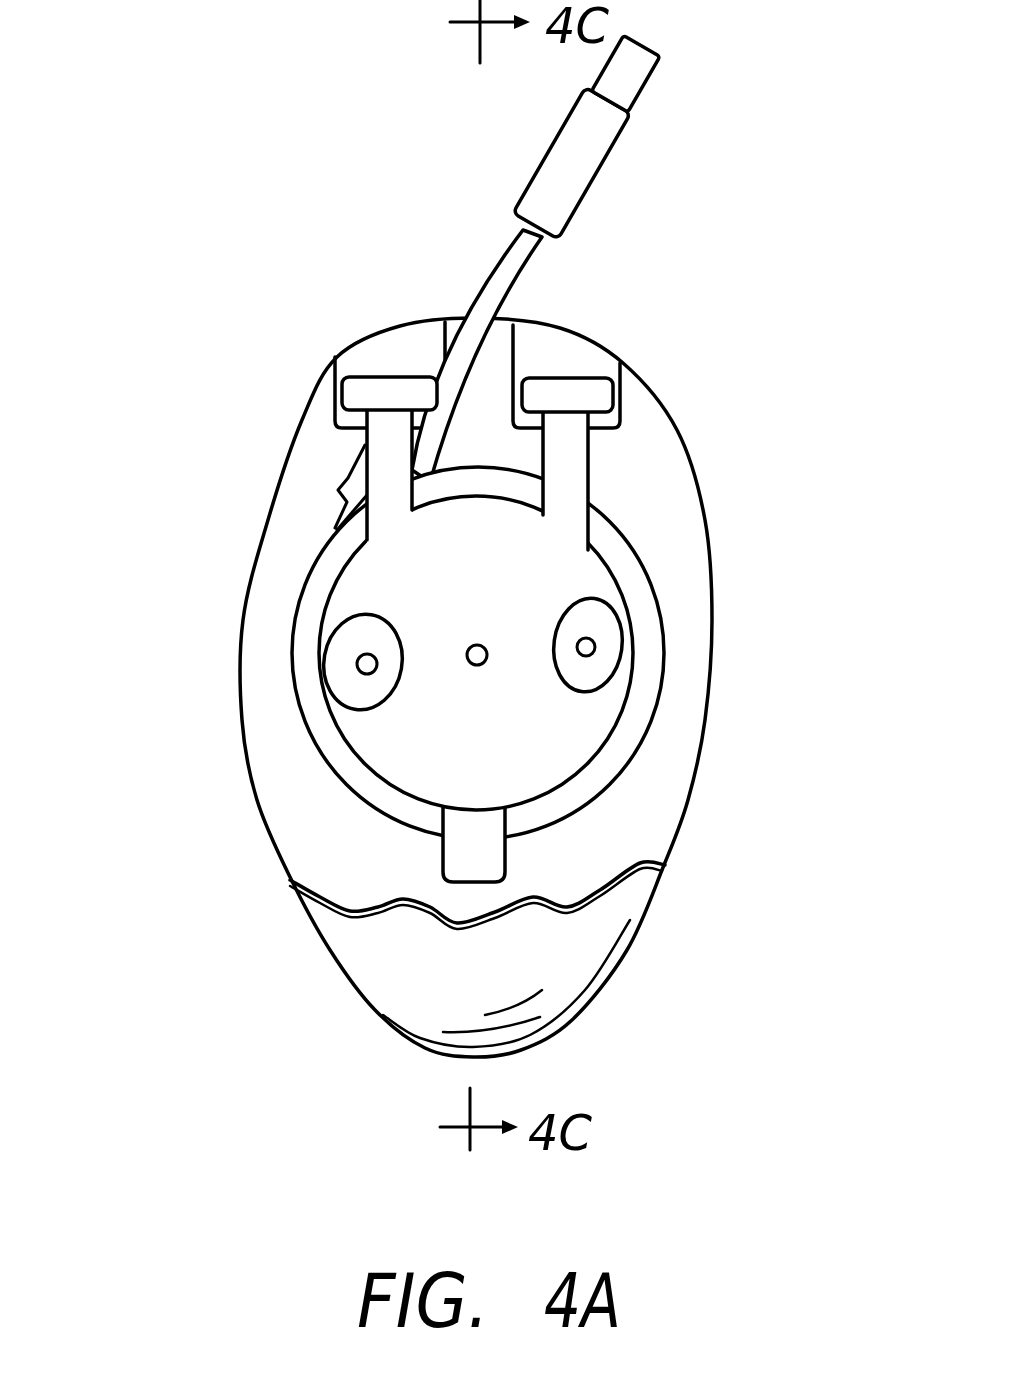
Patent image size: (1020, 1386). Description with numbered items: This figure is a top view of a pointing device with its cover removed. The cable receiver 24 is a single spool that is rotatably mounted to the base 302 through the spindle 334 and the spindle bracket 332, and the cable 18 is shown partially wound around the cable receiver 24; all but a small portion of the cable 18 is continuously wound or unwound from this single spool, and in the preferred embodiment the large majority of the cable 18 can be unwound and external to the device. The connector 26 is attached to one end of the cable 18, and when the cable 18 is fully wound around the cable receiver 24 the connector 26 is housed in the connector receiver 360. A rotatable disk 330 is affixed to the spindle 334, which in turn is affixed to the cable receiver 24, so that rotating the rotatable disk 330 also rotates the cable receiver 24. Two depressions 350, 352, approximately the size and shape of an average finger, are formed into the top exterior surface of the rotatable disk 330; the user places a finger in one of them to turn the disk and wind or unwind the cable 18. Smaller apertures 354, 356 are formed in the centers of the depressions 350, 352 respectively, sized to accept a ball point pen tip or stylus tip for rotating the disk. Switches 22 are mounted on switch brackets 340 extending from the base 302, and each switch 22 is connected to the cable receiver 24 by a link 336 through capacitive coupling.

The cable 18 is at (490, 277).
The switch 22 is at (340, 388).
The cable receiver 24 is at (606, 516).
The connector 26 is at (567, 125).
The base 302 is at (273, 830).
The rotatable disk 330 is at (373, 575).
The spindle bracket 332 is at (458, 863).
The spindle 334 is at (488, 662).
The link 336 is at (382, 472).
The switch bracket 340 is at (386, 355).
The depression 350 is at (608, 627).
The depression 352 is at (345, 635).
The aperture 354 is at (596, 652).
The aperture 356 is at (353, 668).
The connector receiver 360 is at (522, 333).